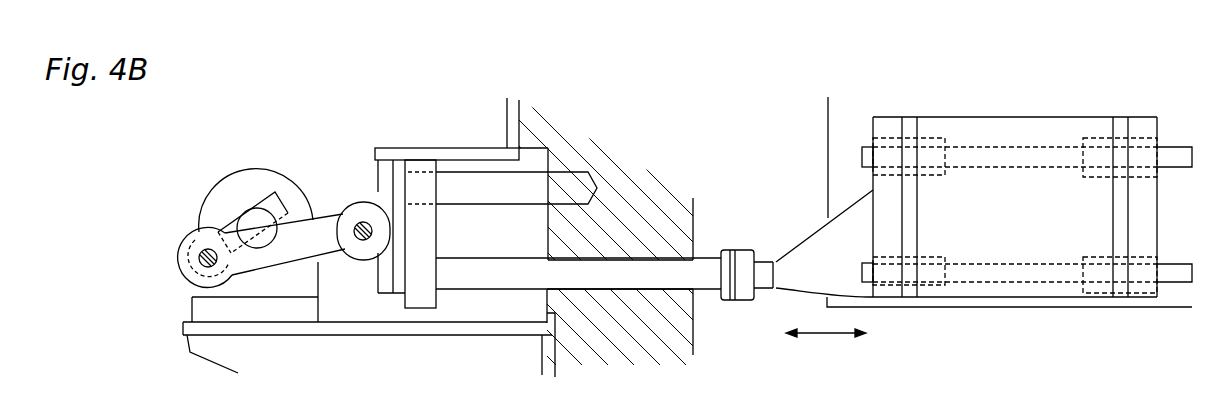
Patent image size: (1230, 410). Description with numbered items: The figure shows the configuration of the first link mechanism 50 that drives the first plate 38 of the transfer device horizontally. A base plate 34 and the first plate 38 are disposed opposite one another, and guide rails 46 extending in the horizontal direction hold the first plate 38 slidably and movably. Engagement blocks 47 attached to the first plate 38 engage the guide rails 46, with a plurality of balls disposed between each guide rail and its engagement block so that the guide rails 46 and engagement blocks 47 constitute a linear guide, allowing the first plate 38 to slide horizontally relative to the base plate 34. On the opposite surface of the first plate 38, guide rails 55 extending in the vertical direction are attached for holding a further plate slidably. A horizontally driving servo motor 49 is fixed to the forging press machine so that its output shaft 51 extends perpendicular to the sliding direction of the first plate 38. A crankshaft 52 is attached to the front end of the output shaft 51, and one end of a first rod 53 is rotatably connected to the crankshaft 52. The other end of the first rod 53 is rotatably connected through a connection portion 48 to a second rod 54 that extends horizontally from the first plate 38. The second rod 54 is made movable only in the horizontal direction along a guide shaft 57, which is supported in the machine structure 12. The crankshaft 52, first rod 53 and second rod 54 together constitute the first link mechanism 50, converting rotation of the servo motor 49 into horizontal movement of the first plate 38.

The chamber wall 12 is at (610, 148).
The base plate 34 is at (826, 113).
The first plate 38 is at (1031, 108).
The guide rails 46 is at (1172, 152).
The engagement blocks 47 is at (933, 138).
The connection portion 48 is at (742, 248).
The horizontally driving servo motor 49 is at (242, 183).
The first link mechanism 50 is at (342, 133).
The output shaft 51 is at (253, 217).
The crankshaft 52 is at (229, 227).
The first rod 53 is at (328, 228).
The second rod 54 is at (508, 273).
The guide rails 55 is at (908, 200).
The guide shaft 57 is at (463, 183).